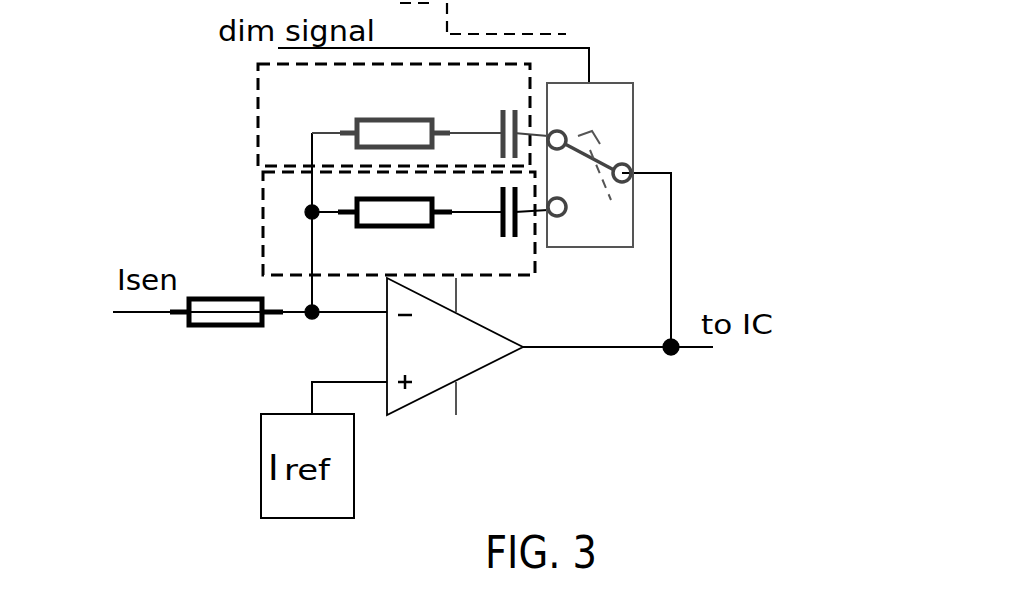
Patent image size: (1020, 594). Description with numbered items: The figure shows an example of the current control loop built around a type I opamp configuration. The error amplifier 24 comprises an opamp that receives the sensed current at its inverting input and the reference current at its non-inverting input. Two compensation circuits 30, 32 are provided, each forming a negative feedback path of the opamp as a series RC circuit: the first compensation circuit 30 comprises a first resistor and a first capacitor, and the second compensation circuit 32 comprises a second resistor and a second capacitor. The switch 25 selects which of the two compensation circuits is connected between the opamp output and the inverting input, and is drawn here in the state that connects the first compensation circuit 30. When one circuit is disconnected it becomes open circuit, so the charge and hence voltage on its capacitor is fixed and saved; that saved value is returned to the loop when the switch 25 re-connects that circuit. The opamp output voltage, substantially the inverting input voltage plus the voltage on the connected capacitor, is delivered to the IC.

The first compensation circuit 30 is at (258, 92).
The second compensation circuit 32 is at (258, 208).
The switch 25 is at (628, 108).
The error amplifier 24 is at (483, 367).